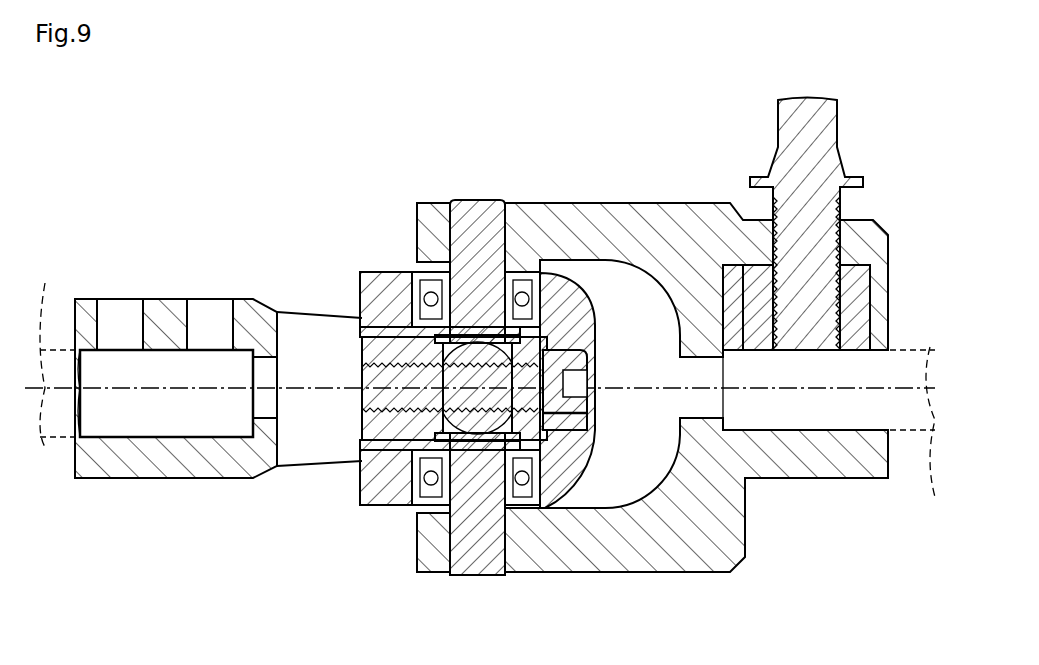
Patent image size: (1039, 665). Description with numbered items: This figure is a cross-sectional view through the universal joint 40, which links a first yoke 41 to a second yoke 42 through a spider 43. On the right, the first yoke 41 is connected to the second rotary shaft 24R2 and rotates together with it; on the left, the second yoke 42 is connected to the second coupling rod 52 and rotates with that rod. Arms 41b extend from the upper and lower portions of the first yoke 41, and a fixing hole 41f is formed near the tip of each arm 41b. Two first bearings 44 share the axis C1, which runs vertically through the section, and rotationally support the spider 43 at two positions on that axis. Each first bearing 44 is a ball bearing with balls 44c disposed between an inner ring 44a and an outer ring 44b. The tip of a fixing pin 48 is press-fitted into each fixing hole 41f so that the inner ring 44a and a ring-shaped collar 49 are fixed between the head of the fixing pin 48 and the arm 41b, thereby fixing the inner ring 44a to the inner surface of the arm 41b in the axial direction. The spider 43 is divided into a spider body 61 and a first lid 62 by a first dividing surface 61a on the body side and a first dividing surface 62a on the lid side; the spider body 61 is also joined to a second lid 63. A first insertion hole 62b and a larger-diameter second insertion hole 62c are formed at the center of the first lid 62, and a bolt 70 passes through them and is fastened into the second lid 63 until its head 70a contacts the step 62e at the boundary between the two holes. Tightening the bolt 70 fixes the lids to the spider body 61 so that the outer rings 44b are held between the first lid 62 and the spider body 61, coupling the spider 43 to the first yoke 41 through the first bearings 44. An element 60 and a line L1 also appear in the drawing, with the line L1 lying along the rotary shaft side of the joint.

The universal joint 40 is at (687, 100).
The first yoke 41 is at (862, 220).
The arm 41b is at (417, 204).
The fixing hole 41f is at (498, 204).
The second yoke 42 is at (185, 480).
The spider 43 is at (362, 436).
The first bearing 44 is at (400, 300).
The inner ring 44a is at (466, 268).
The outer ring 44b is at (400, 333).
The ball 44c is at (525, 480).
The fixing pin 48 is at (458, 203).
The collar 49 is at (432, 275).
The second coupling rod 52 is at (50, 300).
The bolt 60 is at (838, 108).
The spider body 61 is at (362, 488).
The first dividing surface 61a is at (420, 272).
The first lid 62 is at (565, 283).
The first dividing surface 62a is at (522, 273).
The first insertion hole 62b is at (560, 396).
The second insertion hole 62c is at (595, 428).
The step 62e is at (577, 332).
The second lid 63 is at (362, 352).
The bolt 70 is at (590, 368).
The head 70a is at (586, 340).
The second rotary shaft 24R2 is at (910, 490).
The axis L1 is at (912, 347).
The axis C1 is at (478, 600).